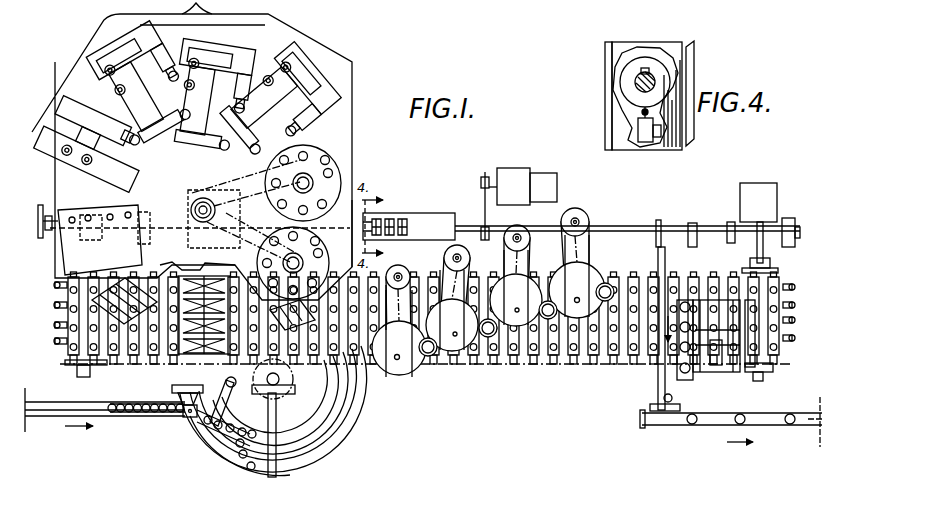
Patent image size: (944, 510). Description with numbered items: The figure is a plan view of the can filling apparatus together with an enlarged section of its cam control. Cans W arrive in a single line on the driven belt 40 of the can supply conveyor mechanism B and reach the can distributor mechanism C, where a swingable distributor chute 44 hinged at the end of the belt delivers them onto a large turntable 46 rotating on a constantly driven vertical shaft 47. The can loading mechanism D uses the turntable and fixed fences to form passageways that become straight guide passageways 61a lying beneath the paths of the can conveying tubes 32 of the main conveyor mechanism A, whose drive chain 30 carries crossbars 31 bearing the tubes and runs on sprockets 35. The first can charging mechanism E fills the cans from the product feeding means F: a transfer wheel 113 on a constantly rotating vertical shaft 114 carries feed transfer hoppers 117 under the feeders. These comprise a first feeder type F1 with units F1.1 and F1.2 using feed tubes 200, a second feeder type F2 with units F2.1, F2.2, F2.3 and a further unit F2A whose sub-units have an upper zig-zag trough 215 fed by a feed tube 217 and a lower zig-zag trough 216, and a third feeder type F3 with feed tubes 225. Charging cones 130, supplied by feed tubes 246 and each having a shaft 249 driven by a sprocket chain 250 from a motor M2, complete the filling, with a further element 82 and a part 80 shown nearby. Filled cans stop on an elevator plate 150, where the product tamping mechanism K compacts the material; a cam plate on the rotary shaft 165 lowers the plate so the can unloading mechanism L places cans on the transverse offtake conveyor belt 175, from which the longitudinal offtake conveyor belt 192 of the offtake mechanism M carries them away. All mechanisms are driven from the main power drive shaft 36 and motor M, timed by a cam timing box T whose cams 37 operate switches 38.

In FIG. 1, the upper zig-zag trough 215 is at (86, 104).
In FIG. 1, the lower zig-zag trough 216 is at (96, 86).
In FIG. 1, the feed tube 217 is at (204, 85).
In FIG. 1, the feed tubes 225 is at (127, 213).
In FIG. 1, the feed tubes 200 is at (272, 170).
In FIG. 1, the vertical shaft 114 is at (191, 210).
In FIG. 1, the transfer wheel 113 is at (191, 264).
In FIG. 1, the feed transfer hoppers 117 is at (122, 288).
In FIG. 1, the cams 37 is at (399, 218).
In FIG. 4, the cams 37 is at (622, 92).
In FIG. 1, the main power drive shaft 36 is at (620, 225).
In FIG. 4, the main power drive shaft 36 is at (636, 75).
In FIG. 4, the switches 38 is at (638, 128).
In FIG. 1, the sprocket chain 250 is at (410, 284).
In FIG. 1, the guide 82 is at (492, 281).
In FIG. 1, the charging cones 130 is at (406, 338).
In FIG. 1, the shaft 249 is at (488, 334).
In FIG. 1, the feed tubes 246 is at (430, 356).
In FIG. 1, the carrier 80 is at (605, 283).
In FIG. 1, the elevator plate 150 is at (659, 266).
In FIG. 1, the transverse offtake conveyor belt 175 is at (660, 398).
In FIG. 1, the rotary shaft 165 is at (735, 366).
In FIG. 1, the longitudinal offtake conveyor belt 192 is at (811, 428).
In FIG. 1, the distributor chute 44 is at (230, 431).
In FIG. 1, the turntable 46 is at (305, 470).
In FIG. 1, the vertical shaft 47 is at (278, 391).
In FIG. 1, the straight guide passageways 61a is at (346, 446).
In FIG. 1, the drive chain 30 is at (592, 369).
In FIG. 1, the crossbars 31 is at (58, 316).
In FIG. 1, the can conveying tubes 32 is at (56, 304).
In FIG. 1, the sprockets 35 is at (66, 364).
In FIG. 1, the driven belt 40 is at (53, 425).
In FIG. 1, the product feeding means F is at (354, 152).
In FIG. 1, the first feeder type F1 is at (350, 232).
In FIG. 1, the first feeder unit F1.1 is at (246, 262).
In FIG. 1, the first feeder unit F1.2 is at (330, 156).
In FIG. 1, the second feeder type F2 is at (197, 7).
In FIG. 1, the second feeder unit F2.1 is at (326, 84).
In FIG. 1, the second feeder unit F2.2 is at (240, 56).
In FIG. 1, the second feeder unit F2.3 is at (120, 50).
In FIG. 1, the tool unit F2A is at (50, 152).
In FIG. 1, the third feeder type F3 is at (68, 258).
In FIG. 1, the cam timing box T is at (447, 216).
In FIG. 4, the cam timing box T is at (632, 41).
In FIG. 1, the motor M is at (549, 194).
In FIG. 1, the motor M2 is at (400, 266).
In FIG. 1, the main conveyor mechanism A is at (523, 367).
In FIG. 1, the can supply conveyor mechanism B is at (128, 420).
In FIG. 1, the can distributor mechanism C is at (208, 431).
In FIG. 1, the can loading mechanism D is at (366, 421).
In FIG. 1, the first can charging mechanism E is at (178, 352).
In FIG. 1, the product tamping mechanism K is at (686, 378).
In FIG. 1, the can unloading mechanism L is at (655, 353).
In FIG. 1, the cans W is at (791, 413).